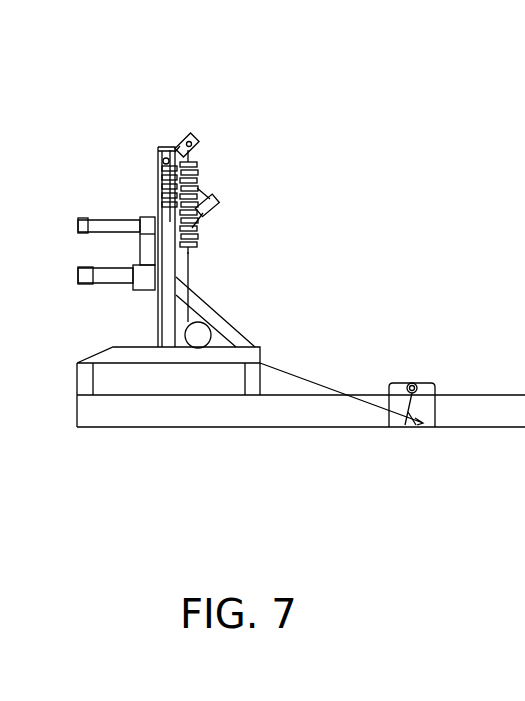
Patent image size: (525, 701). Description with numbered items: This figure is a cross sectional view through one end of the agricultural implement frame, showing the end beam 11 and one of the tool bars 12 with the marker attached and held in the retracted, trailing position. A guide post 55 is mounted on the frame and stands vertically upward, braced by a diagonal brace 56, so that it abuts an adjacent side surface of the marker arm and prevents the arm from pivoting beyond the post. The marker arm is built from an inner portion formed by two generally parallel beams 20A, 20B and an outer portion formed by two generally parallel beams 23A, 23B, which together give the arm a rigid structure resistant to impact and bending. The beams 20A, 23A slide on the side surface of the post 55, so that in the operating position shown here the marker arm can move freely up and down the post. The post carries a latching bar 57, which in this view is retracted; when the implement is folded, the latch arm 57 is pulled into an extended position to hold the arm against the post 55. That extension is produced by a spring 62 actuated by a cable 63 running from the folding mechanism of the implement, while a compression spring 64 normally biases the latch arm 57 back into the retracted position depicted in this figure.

The end beam 11 is at (93, 410).
The tool bars 12 is at (272, 415).
The beam 20A is at (148, 278).
The beam 20B is at (85, 279).
The beam 23A is at (140, 217).
The beam 23B is at (78, 218).
The guide post 55 is at (222, 185).
The diagonal brace 56 is at (227, 320).
The latching bar 57 is at (214, 209).
The spring 62 is at (197, 172).
The cable 63 is at (326, 394).
The compression spring 64 is at (175, 175).